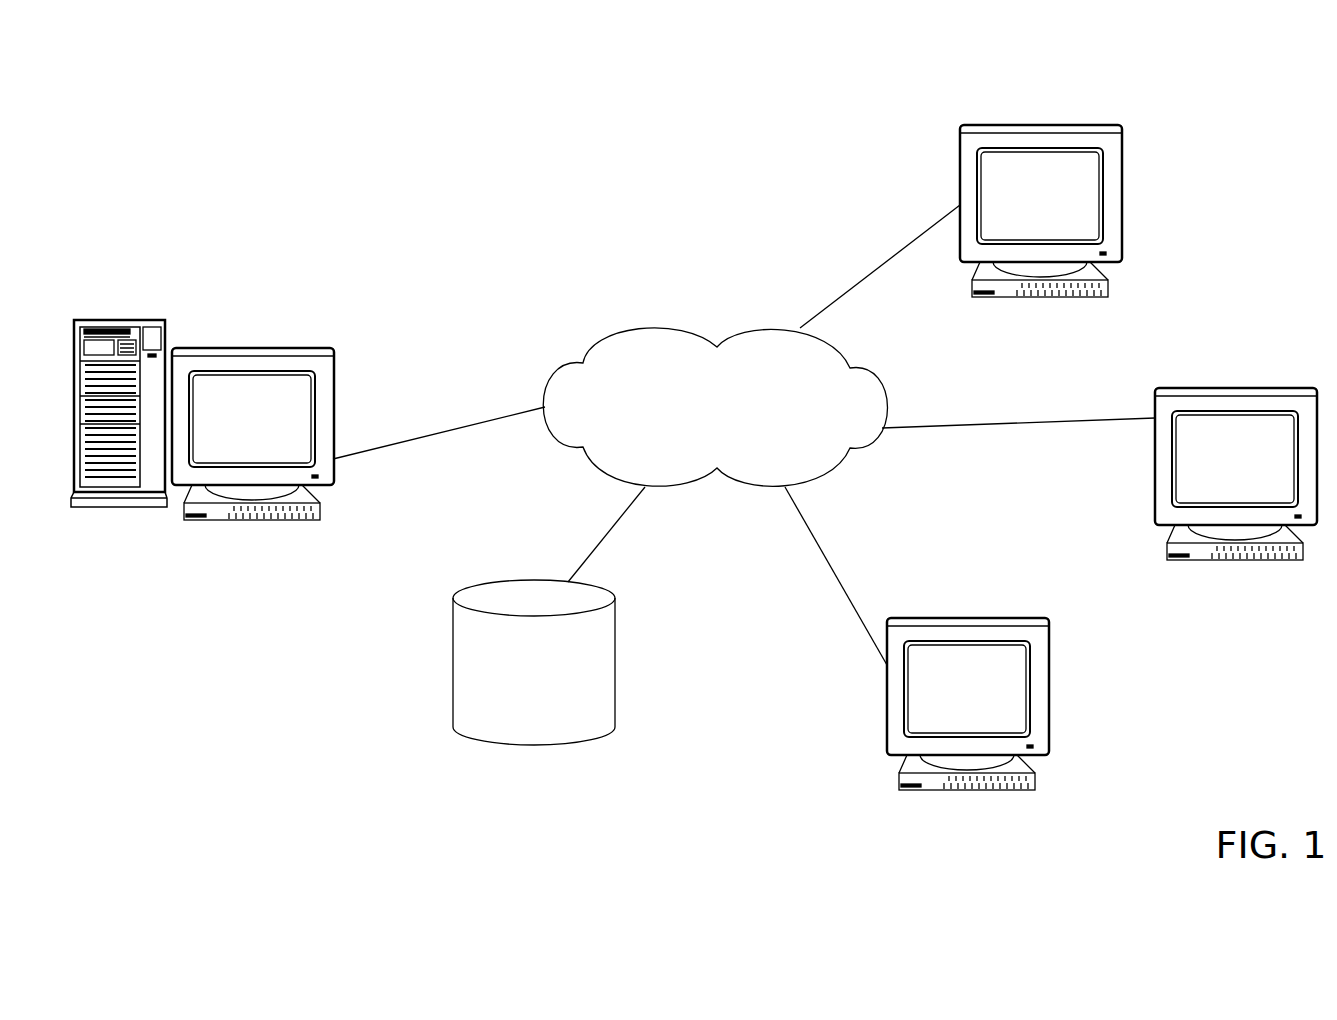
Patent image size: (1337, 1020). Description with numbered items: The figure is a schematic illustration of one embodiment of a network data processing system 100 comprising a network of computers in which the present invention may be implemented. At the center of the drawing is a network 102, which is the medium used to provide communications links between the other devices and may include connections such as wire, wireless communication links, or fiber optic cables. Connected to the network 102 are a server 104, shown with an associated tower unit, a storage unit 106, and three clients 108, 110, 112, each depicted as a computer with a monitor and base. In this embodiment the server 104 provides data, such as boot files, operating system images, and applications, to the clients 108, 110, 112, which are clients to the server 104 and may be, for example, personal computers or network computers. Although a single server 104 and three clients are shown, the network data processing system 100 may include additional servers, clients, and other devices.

The network data processing system 100 is at (759, 681).
The network 102 is at (687, 401).
The server 104 is at (262, 348).
The storage unit 106 is at (563, 741).
The client 108 is at (1043, 125).
The client 110 is at (1243, 388).
The client 112 is at (1048, 690).